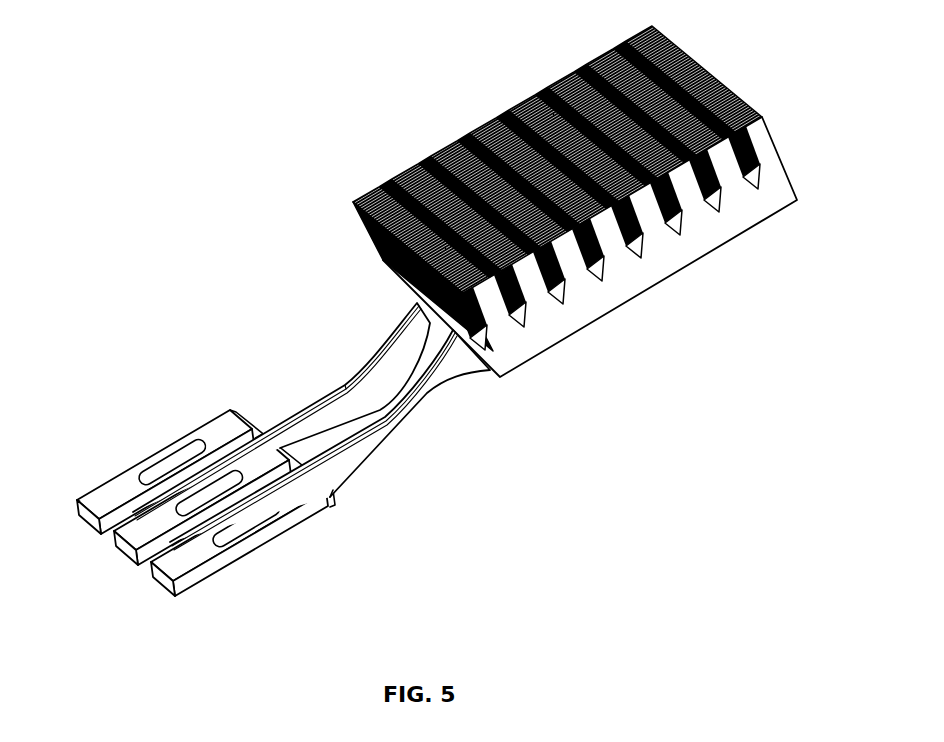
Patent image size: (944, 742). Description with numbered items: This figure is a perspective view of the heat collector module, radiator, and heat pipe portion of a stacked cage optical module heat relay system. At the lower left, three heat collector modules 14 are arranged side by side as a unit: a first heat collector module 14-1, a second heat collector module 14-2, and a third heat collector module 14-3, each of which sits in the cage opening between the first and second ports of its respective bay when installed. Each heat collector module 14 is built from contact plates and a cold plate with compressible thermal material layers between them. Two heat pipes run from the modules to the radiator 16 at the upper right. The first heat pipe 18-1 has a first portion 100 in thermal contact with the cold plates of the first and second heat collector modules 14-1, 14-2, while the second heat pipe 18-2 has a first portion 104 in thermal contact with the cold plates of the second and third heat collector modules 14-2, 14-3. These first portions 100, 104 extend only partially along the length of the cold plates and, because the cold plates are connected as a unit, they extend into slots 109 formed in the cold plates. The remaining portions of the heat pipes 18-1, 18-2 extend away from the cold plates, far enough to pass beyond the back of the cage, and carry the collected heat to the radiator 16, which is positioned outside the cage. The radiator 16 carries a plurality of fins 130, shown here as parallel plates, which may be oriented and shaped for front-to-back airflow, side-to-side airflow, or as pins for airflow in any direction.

The heat collector module 14 is at (213, 420).
The first heat collector module 14-1 is at (144, 472).
The second heat collector module 14-2 is at (166, 511).
The third heat collector module 14-3 is at (239, 556).
The radiator 16 is at (727, 242).
The first heat pipe 18-1 is at (370, 360).
The second heat pipe 18-2 is at (330, 440).
The first portion of the first heat pipe 100 is at (228, 423).
The first portion of the second heat pipe 104 is at (283, 484).
The slot 109 is at (265, 425).
The fins 130 is at (777, 153).